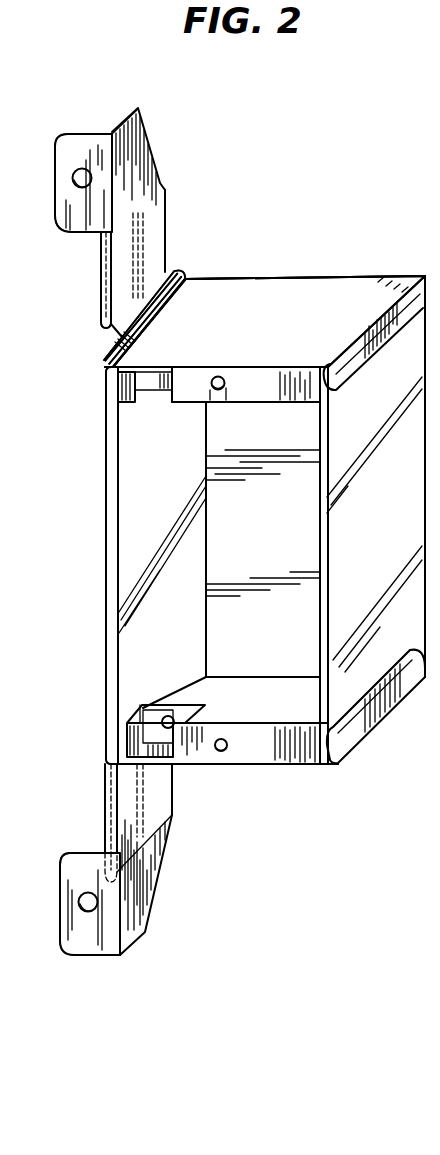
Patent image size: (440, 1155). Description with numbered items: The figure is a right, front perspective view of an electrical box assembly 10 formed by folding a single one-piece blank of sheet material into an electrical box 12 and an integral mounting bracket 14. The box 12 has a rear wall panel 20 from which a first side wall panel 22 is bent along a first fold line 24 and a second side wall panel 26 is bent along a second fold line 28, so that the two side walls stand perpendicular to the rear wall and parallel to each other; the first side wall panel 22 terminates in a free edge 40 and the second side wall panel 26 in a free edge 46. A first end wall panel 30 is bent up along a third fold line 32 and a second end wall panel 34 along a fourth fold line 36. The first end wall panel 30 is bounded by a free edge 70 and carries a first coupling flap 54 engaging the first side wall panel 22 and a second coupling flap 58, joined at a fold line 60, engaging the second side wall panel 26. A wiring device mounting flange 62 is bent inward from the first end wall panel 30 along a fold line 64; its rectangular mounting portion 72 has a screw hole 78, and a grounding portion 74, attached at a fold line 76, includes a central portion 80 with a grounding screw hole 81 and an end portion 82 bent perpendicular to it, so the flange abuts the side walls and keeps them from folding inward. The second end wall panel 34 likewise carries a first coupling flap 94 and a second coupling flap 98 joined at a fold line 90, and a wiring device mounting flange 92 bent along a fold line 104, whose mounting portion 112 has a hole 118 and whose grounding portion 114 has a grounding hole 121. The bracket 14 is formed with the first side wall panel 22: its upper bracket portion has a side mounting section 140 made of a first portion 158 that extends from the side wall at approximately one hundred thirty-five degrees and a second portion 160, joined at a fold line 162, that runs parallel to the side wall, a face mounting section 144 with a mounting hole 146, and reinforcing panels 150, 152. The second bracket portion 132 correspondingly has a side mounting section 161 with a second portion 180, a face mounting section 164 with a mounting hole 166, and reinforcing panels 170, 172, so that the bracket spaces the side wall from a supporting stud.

The electrical box assembly 10 is at (312, 185).
The electrical box 12 is at (352, 262).
The mounting bracket 14 is at (200, 152).
The rear wall panel 20 is at (268, 572).
The first side wall panel 22 is at (104, 566).
The first fold line 24 is at (207, 510).
The second side wall panel 26 is at (312, 592).
The second fold line 28 is at (427, 556).
The first end wall panel 30 is at (284, 309).
The third fold line 32 is at (276, 277).
The second end wall panel 34 is at (255, 678).
The fourth fold line 36 is at (308, 678).
The free edge 40 is at (106, 503).
The free edge 46 is at (327, 512).
The first coupling flap 54 is at (103, 386).
The second coupling flap 58 is at (370, 364).
The fold line 60 is at (402, 290).
The wiring device mounting flange 62 is at (304, 380).
The fold line 64 is at (270, 366).
The free edge 70 is at (193, 286).
The mounting portion 72 is at (267, 406).
The grounding portion 74 is at (135, 405).
The fold line 76 is at (174, 394).
The hole 78 is at (219, 377).
The first or central portion 80 is at (163, 390).
The mounting hole 81 is at (157, 390).
The second or end portion 82 is at (137, 377).
The fold line 90 is at (383, 720).
The wiring device mounting flange 92 is at (305, 768).
The first coupling flap 94 is at (105, 742).
The second coupling flap 98 is at (381, 673).
The fold line 104 is at (267, 766).
The mounting portion 112 is at (250, 719).
The grounding portion 114 is at (209, 702).
The hole 118 is at (225, 753).
The mounting hole 121 is at (168, 716).
The second bracket portion 132 is at (159, 122).
The first side mounting section 140 is at (154, 146).
The face mounting section 144 is at (70, 135).
The mounting hole 146 is at (87, 171).
The reinforcing panel 150 is at (137, 213).
The reinforcing panel 152 is at (158, 180).
The first portion 158 is at (173, 280).
The second portion 160 is at (170, 215).
The first side mounting section 161 is at (147, 932).
The fold line 162 is at (107, 332).
The face mounting section 164 is at (105, 957).
The mounting hole 166 is at (84, 912).
The reinforcing panel 170 is at (102, 853).
The reinforcing panel 172 is at (143, 838).
The second portion 180 is at (173, 791).